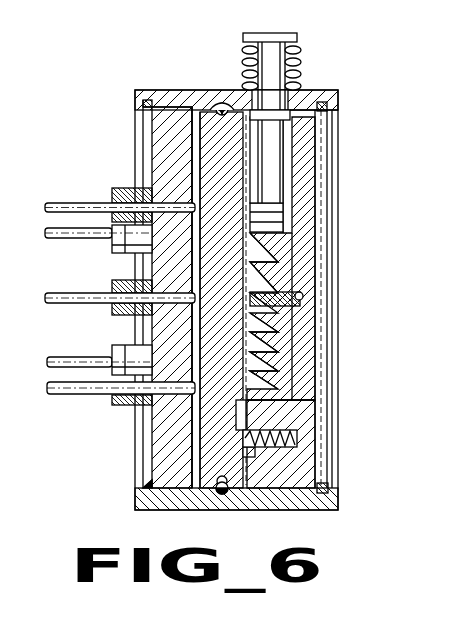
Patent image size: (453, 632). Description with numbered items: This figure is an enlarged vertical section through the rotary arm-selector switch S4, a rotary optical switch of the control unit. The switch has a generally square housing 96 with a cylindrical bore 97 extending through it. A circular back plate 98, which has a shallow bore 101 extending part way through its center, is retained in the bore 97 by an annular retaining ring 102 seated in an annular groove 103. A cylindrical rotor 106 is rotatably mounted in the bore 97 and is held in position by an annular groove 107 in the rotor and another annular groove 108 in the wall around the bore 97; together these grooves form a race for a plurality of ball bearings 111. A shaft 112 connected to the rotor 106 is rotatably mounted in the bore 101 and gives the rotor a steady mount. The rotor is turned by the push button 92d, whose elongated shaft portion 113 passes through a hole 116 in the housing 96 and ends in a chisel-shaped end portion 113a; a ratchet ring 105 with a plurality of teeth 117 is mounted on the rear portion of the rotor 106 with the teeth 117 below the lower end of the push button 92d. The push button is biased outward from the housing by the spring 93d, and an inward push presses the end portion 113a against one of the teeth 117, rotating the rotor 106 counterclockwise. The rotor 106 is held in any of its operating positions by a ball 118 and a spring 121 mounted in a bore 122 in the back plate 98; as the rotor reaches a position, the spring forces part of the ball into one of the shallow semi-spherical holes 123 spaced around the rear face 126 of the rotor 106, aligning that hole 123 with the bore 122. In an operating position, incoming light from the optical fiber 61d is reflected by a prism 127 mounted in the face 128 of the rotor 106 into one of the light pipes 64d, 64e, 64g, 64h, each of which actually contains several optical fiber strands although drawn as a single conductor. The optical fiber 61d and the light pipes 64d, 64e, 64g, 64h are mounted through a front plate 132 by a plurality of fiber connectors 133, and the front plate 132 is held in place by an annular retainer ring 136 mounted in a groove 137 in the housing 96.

The rotary arm-selector switch S4 is at (340, 88).
The housing 96 is at (313, 92).
The cylindrical bore 97 is at (173, 108).
The circular back plate 98 is at (310, 140).
The push button 92d is at (293, 36).
The spring 93d is at (248, 63).
The shallow bore 101 is at (303, 290).
The annular retaining ring 102 is at (320, 483).
The annular groove 103 is at (340, 500).
The ratchet ring 105 is at (300, 265).
The cylindrical rotor 106 is at (197, 123).
The annular groove 107 is at (246, 162).
The annular groove 108 is at (222, 498).
The ball bearings 111 is at (222, 101).
The shaft 112 is at (300, 313).
The elongated shaft portion 113 is at (300, 163).
The chisel-shaped end portion 113a is at (300, 227).
The hole 116 is at (317, 115).
The teeth 117 is at (265, 390).
The ball 118 is at (245, 402).
The spring 121 is at (297, 438).
The bore 122 is at (300, 447).
The shallow semi-spherical holes 123 is at (248, 449).
The rear face 126 is at (300, 397).
The prism 127 is at (223, 300).
The face 128 is at (185, 437).
The front plate 132 is at (160, 462).
The fiber connectors 133 is at (123, 190).
The annular retainer ring 136 is at (147, 483).
The groove 137 is at (140, 492).
The light pipe 64d is at (67, 200).
The light pipe 64e is at (67, 236).
The light pipe 64g is at (57, 357).
The light pipe 64h is at (50, 396).
The optical fiber 61d is at (92, 293).